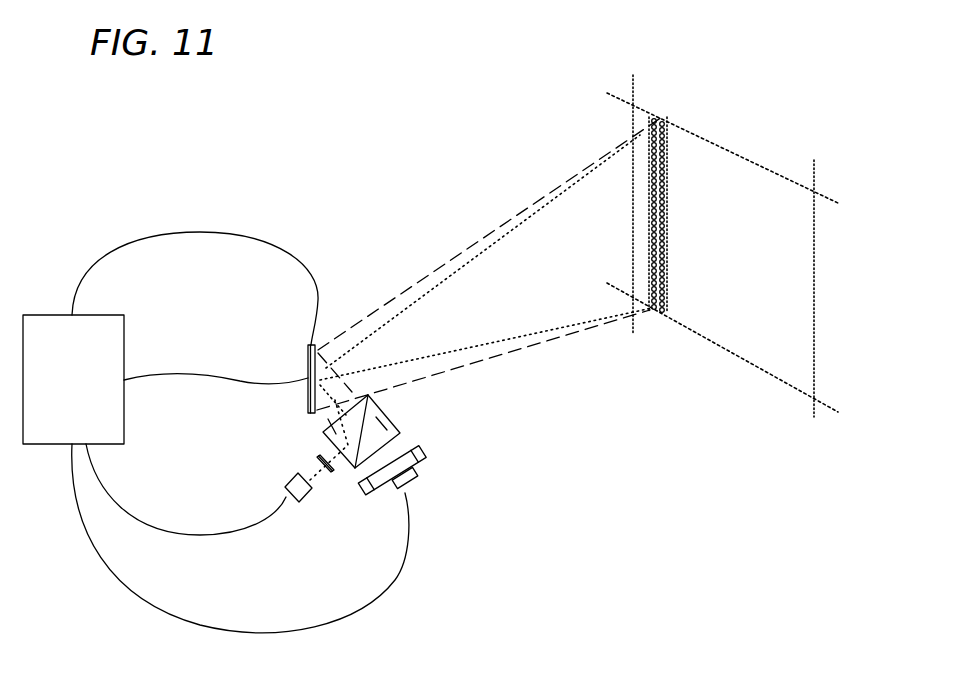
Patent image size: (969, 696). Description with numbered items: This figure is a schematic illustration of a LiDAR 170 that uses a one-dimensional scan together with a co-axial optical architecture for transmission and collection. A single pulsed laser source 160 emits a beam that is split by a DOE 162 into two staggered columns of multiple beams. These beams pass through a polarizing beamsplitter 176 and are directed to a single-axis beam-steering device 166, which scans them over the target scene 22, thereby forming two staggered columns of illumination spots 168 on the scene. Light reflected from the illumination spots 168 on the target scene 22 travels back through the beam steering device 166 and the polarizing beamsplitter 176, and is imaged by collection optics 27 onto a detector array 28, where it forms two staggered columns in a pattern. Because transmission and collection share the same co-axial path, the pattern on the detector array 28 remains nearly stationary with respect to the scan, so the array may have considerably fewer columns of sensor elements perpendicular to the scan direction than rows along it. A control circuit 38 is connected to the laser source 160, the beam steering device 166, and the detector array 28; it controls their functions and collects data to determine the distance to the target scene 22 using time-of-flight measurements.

The LiDAR 170 is at (149, 137).
The control circuit 38 is at (88, 393).
The single-axis beam-steering device 166 is at (307, 364).
The polarizing beamsplitter 176 is at (398, 406).
The collection optics 27 is at (422, 440).
The detector array 28 is at (413, 475).
The DOE 162 is at (318, 463).
The pulsed laser source 160 is at (304, 500).
The illumination spots 168 is at (660, 153).
The target scene 22 is at (800, 323).